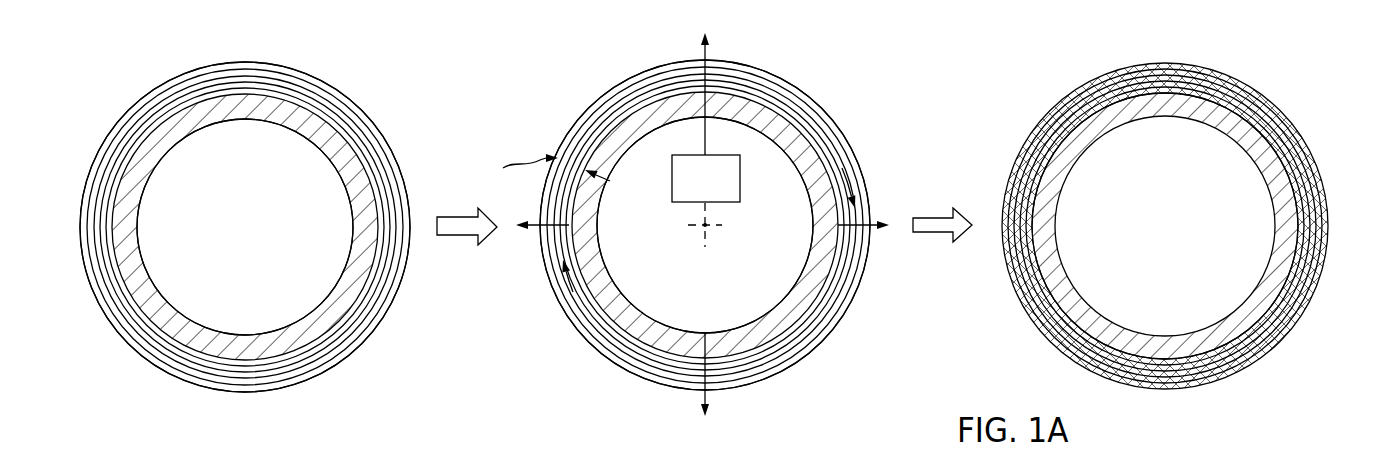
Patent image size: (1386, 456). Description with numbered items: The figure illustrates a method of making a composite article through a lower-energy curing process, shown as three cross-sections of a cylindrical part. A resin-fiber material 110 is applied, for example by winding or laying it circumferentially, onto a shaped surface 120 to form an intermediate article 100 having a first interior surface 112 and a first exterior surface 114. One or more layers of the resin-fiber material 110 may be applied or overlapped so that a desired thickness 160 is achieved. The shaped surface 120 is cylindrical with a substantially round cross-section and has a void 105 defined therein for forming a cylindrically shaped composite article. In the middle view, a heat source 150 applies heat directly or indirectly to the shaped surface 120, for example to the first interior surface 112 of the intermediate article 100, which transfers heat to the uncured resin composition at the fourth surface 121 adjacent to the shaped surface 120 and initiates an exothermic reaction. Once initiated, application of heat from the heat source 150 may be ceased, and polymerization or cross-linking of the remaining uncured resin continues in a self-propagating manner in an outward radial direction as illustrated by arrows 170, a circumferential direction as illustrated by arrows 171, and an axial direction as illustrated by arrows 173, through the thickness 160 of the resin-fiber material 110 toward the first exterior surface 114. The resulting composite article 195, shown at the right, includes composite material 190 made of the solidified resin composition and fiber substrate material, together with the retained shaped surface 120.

The intermediate article 100 is at (140, 75).
The void 105 is at (265, 262).
The resin-fiber material 110 is at (113, 298).
The first interior surface 112 is at (140, 188).
The first exterior surface 114 is at (120, 123).
The shaped surface 120 is at (192, 337).
The fourth surface 121 is at (337, 130).
The heat source 150 is at (706, 178).
The thickness 160 is at (542, 167).
The arrows 170 is at (705, 50).
The arrows 171 is at (842, 168).
The arrows 173 is at (707, 228).
The composite material 190 is at (1062, 110).
The composite article 195 is at (1297, 66).